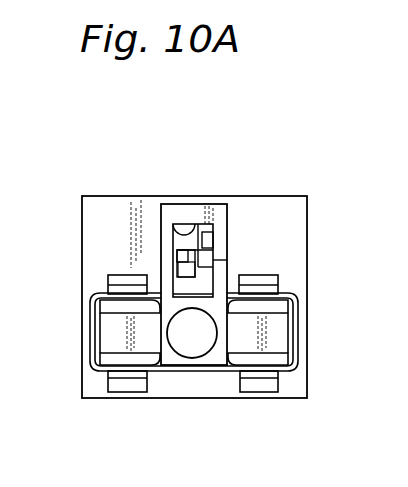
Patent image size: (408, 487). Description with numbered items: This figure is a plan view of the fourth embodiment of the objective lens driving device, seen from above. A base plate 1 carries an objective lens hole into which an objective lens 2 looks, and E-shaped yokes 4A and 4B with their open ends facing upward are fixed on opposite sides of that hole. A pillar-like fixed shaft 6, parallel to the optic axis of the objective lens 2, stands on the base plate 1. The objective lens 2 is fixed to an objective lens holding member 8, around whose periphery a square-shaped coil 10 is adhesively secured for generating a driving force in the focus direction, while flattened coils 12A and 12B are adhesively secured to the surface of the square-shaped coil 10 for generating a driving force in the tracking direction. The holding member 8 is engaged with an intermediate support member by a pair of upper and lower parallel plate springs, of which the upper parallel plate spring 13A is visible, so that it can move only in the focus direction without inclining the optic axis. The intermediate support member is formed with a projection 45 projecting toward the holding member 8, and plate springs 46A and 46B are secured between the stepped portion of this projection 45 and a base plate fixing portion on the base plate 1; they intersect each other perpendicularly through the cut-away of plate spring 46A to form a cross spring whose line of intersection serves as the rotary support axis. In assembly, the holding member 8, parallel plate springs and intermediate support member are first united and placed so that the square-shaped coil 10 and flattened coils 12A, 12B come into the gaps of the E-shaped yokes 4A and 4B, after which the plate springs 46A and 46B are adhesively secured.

The base plate 1 is at (282, 250).
The objective lens 2 is at (190, 340).
The E-shaped yoke 4A is at (272, 282).
The E-shaped yoke 4B is at (122, 276).
The fixed shaft 6 is at (178, 264).
The objective lens holding member 8 is at (270, 338).
The square-shaped coil 10 is at (283, 362).
The flattened coil 12A is at (284, 372).
The flattened coil 12B is at (93, 372).
The parallel plate spring 13A is at (217, 250).
The projection 45 is at (203, 230).
The plate spring 46A is at (178, 228).
The plate spring 46B is at (227, 267).